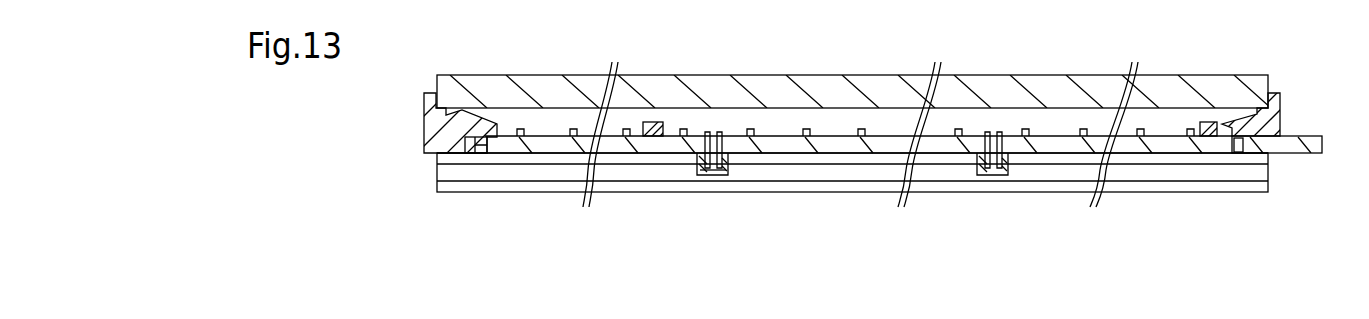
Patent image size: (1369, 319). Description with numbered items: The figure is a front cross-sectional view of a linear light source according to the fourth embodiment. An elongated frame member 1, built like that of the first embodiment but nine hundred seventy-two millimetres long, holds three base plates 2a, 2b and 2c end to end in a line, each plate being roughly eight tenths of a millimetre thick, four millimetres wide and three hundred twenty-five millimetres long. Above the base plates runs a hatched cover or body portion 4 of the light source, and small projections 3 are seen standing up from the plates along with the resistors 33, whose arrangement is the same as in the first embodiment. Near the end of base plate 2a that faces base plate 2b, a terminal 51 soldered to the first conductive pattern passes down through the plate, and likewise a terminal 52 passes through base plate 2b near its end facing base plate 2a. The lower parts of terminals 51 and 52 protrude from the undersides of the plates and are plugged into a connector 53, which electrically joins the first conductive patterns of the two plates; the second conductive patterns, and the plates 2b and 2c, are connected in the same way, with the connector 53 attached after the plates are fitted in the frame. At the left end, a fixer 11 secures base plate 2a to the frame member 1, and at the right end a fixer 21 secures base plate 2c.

The frame member 1 is at (507, 208).
The base plate 2a is at (613, 150).
The base plate 2b is at (878, 148).
The base plate 2c is at (1162, 148).
The protrusions 3 is at (518, 128).
The cover plate 4 is at (712, 82).
The fixer 11 is at (423, 140).
The fixer 21 is at (1281, 110).
The resistor 33 is at (651, 120).
The terminal 51 is at (696, 170).
The terminal 52 is at (731, 157).
The connector 53 is at (712, 176).